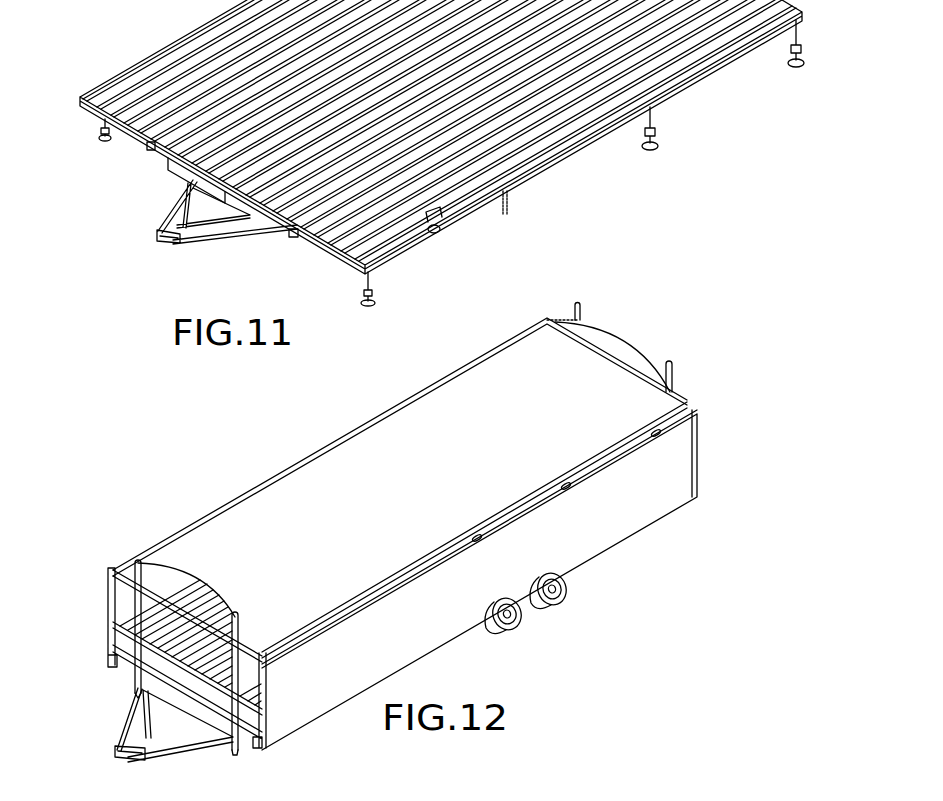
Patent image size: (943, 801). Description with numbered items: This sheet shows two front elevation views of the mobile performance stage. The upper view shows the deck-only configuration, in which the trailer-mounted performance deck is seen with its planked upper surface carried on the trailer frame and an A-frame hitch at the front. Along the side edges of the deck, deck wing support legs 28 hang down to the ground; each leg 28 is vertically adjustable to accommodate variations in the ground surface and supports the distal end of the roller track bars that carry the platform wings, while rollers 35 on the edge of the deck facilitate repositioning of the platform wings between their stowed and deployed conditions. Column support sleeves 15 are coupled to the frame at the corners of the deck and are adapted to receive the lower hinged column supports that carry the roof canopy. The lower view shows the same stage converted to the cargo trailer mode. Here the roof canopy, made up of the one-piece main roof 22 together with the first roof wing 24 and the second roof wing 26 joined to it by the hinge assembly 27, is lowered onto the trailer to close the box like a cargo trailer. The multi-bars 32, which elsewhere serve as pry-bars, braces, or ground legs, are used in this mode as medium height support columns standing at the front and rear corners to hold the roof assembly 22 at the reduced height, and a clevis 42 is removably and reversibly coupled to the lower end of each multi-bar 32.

In FIG. 11, the column support sleeve 15 is at (151, 150).
In FIG. 11, the deck wing support leg 28 is at (100, 128).
In FIG. 11, the rollers 35 is at (337, 256).
In FIG. 12, the main roof 22 is at (622, 347).
In FIG. 12, the first roof wing 24 is at (690, 472).
In FIG. 12, the second roof wing 26 is at (107, 619).
In FIG. 12, the hinge assembly 27 is at (475, 535).
In FIG. 12, the multi-bar 32 is at (581, 313).
In FIG. 12, the clevis 42 is at (135, 690).